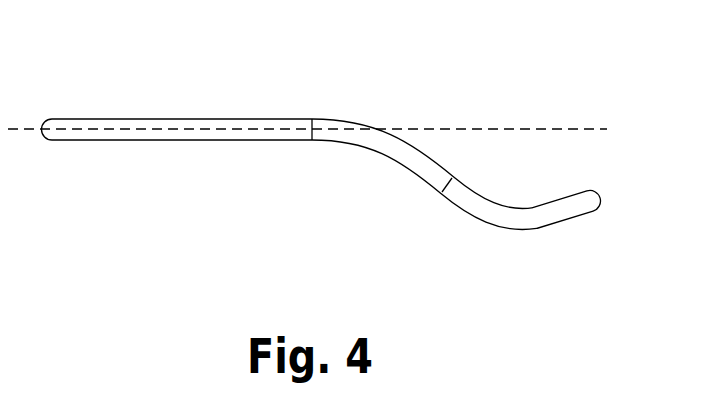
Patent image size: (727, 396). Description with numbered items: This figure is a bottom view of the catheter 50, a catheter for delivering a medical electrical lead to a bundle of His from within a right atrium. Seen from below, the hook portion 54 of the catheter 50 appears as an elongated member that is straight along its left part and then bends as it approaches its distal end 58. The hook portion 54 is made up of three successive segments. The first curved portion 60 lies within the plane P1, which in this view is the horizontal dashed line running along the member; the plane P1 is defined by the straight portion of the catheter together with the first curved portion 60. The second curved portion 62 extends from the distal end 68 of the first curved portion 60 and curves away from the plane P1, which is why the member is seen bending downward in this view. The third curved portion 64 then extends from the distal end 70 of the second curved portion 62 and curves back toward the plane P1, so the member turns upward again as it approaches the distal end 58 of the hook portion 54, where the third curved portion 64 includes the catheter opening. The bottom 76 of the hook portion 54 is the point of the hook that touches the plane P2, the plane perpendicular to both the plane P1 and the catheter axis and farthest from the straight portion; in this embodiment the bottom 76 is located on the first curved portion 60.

The catheter 50 is at (196, 145).
The hook portion 54 is at (97, 115).
The distal end of the hook portion 58 is at (586, 213).
The first curved portion 60 is at (180, 115).
The second curved portion 62 is at (395, 158).
The third curved portion 64 is at (543, 232).
The distal end of the first curved portion 68 is at (303, 118).
The distal end of the second curved portion 70 is at (447, 165).
The bottom of the hook portion 76 is at (263, 128).
The plane P1 is at (574, 128).
The plane P2 is at (314, 231).